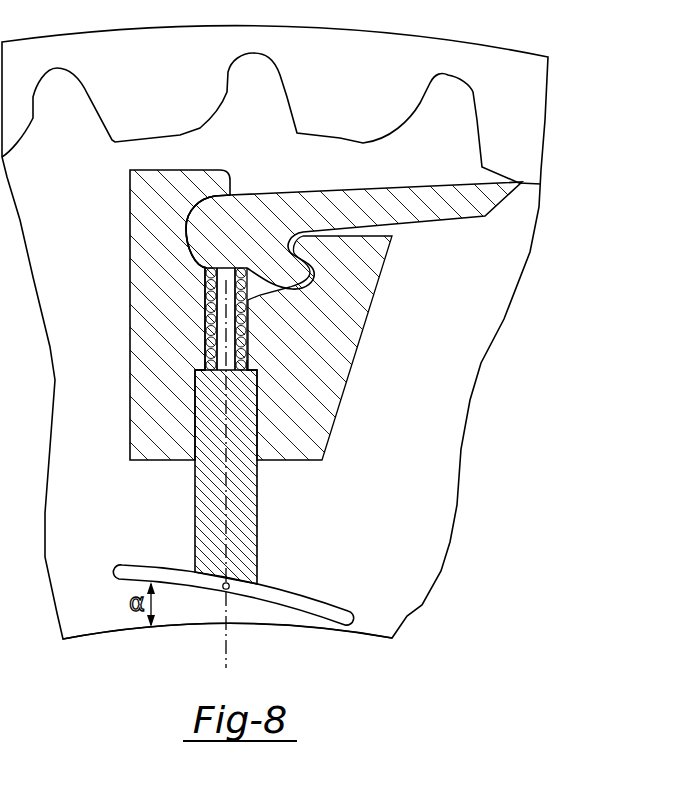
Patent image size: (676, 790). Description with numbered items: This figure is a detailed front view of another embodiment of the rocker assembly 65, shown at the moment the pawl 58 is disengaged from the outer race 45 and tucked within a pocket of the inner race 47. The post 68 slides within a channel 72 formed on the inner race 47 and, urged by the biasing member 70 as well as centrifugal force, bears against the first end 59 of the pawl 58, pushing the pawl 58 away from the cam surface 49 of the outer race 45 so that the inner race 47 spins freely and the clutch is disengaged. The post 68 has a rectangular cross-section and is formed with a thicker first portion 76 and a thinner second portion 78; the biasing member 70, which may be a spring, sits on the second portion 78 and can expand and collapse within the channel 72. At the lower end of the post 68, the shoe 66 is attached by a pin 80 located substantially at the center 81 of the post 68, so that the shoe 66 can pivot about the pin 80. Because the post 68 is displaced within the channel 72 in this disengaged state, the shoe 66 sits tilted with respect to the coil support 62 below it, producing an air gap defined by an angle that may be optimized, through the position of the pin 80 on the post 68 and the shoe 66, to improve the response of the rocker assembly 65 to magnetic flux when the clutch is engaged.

The outer race 45 is at (536, 138).
The inner race 47 is at (147, 203).
The cam surface 49 is at (290, 92).
The pawl 58 is at (423, 213).
The first end 59 is at (193, 232).
The coil support 62 is at (92, 641).
The rocker assembly 65 is at (282, 488).
The shoe 66 is at (323, 613).
The post 68 is at (170, 426).
The biasing member 70 is at (205, 310).
The channel 72 is at (205, 367).
The first portion 76 is at (197, 492).
The second portion 78 is at (223, 340).
The pin 80 is at (223, 592).
The center 81 is at (228, 653).